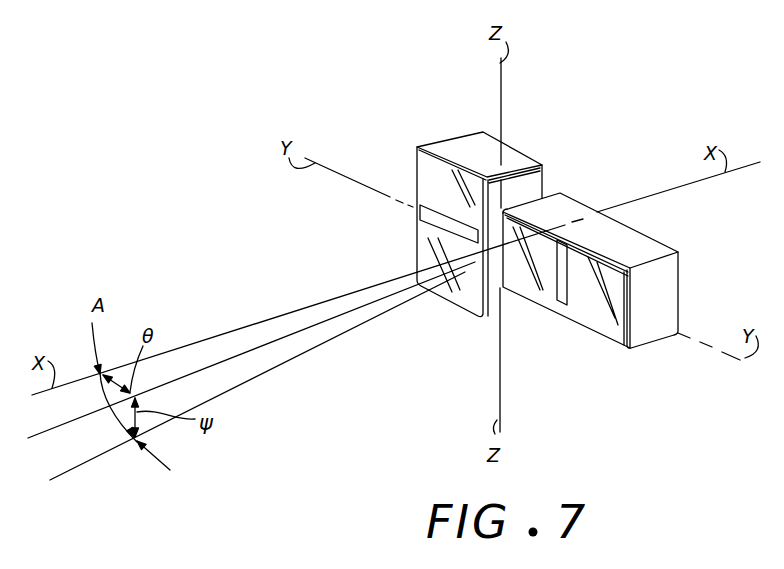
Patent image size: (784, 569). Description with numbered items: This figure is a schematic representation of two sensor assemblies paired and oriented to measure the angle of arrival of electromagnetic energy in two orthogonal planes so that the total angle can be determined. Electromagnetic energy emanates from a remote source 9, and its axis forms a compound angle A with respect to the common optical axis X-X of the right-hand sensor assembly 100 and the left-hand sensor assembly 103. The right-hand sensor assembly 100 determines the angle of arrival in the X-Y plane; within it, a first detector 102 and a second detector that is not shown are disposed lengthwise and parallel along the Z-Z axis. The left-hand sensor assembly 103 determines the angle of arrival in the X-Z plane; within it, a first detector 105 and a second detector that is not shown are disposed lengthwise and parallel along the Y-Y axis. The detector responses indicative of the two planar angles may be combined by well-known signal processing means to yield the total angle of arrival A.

The remote source 9 is at (297, 357).
The right-hand sensor assembly 100 is at (668, 277).
The first detector 102 is at (555, 311).
The left-hand sensor assembly 103 is at (460, 143).
The first detector 105 is at (432, 226).